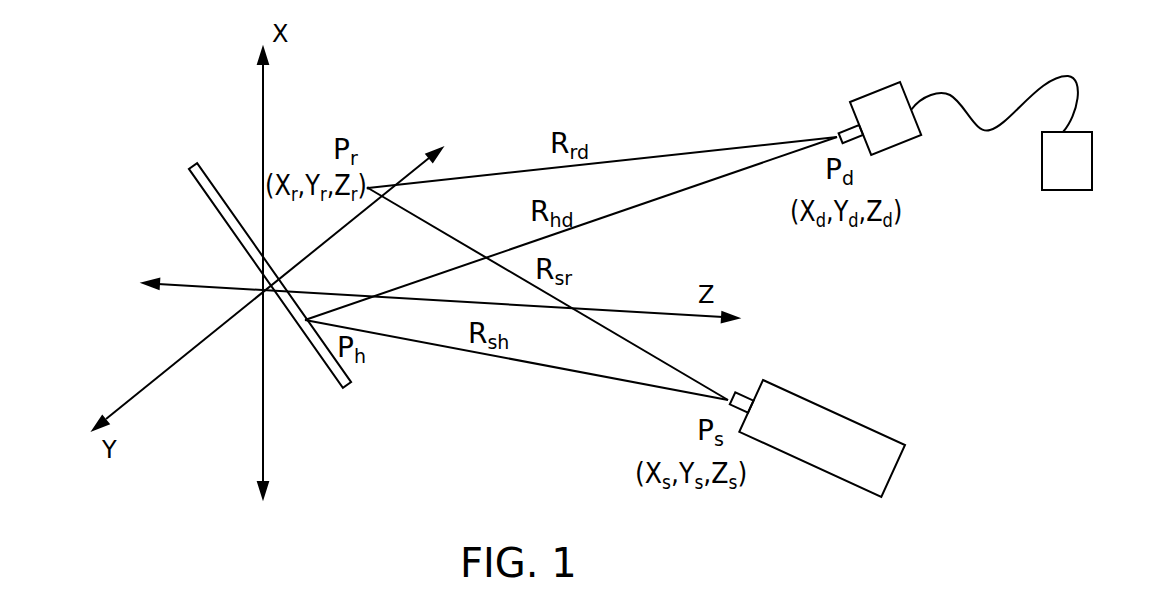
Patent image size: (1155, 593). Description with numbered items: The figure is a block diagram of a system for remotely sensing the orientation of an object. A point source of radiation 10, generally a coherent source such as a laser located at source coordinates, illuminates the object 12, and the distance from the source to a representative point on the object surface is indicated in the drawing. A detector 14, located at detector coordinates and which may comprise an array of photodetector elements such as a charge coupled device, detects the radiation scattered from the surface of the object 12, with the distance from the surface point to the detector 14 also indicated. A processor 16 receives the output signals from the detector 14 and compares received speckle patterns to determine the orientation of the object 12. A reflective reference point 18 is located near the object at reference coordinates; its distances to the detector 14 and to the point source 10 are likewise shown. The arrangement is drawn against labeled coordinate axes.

The point source of radiation 10 is at (833, 411).
The object 12 is at (192, 165).
The detector 14 is at (890, 148).
The processor 16 is at (1068, 190).
The reflective reference point 18 is at (370, 186).